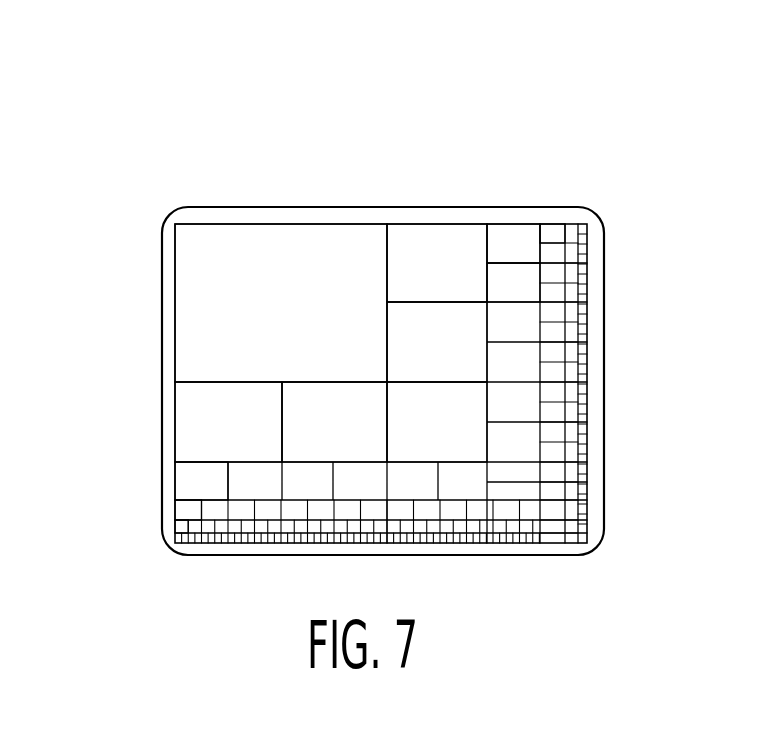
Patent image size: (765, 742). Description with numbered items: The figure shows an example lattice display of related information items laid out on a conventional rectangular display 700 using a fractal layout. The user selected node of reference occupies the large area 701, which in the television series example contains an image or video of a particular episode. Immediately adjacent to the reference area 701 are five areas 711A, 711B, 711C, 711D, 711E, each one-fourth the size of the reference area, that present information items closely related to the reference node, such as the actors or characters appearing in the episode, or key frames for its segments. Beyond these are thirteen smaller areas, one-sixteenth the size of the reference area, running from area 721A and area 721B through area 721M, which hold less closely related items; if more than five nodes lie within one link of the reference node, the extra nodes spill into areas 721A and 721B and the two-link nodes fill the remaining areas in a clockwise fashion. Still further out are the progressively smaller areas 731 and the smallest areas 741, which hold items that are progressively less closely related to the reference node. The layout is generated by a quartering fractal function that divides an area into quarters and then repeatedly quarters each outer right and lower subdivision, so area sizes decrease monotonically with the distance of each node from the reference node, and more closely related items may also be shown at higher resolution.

The rectangular display 700 is at (507, 557).
The user selected node of reference 701 is at (242, 288).
The closely related item area 711A is at (412, 255).
The closely related item area 711B is at (442, 323).
The closely related item area 711C is at (474, 420).
The closely related item area 711D is at (325, 398).
The closely related item area 711E is at (217, 447).
The less closely related item area 721A is at (500, 233).
The less closely related item area 721B is at (507, 277).
The less closely related item area 721M is at (202, 477).
The progressively less closely related areas 731 is at (553, 232).
The progressively less closely related areas 741 is at (178, 528).